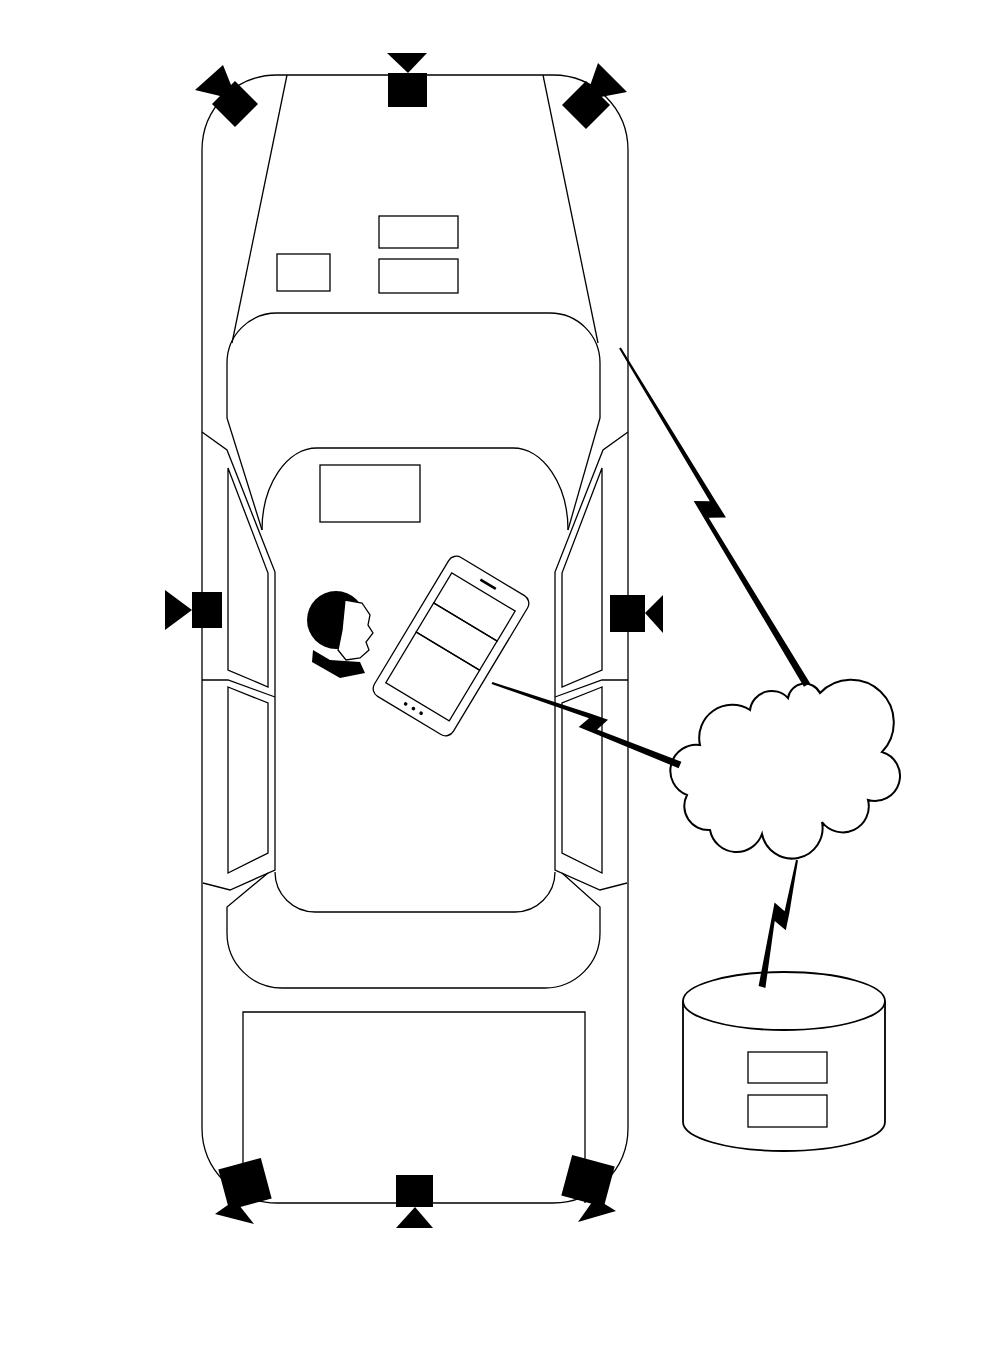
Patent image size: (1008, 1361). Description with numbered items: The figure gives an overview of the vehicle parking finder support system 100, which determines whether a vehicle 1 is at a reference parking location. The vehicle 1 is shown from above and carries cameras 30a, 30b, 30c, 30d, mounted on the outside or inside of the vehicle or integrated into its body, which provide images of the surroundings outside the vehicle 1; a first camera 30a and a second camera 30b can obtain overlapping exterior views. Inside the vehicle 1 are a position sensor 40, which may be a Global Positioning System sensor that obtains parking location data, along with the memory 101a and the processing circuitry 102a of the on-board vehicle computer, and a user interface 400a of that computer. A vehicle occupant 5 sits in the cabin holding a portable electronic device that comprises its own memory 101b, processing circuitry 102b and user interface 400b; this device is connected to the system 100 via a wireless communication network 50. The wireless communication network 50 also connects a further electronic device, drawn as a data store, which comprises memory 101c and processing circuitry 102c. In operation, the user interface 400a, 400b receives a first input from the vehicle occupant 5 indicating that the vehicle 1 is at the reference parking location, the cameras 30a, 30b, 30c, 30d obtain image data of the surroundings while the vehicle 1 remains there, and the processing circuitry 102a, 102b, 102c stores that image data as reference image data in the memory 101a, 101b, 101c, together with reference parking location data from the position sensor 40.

The vehicle parking finder support system 100 is at (84, 43).
The vehicle 1 is at (652, 320).
The first camera 30a is at (233, 88).
The second camera 30b is at (405, 67).
The camera 30c is at (662, 614).
The camera 30d is at (603, 1205).
The position sensor 40 is at (303, 272).
The memory 101a is at (418, 232).
The processing circuitry 102a is at (418, 276).
The user interface 400a is at (370, 493).
The vehicle occupant 5 is at (340, 649).
The memory 101b is at (474, 607).
The processing circuitry 102b is at (456, 636).
The user interface 400b is at (433, 676).
The wireless communication network 50 is at (785, 769).
The memory 101c is at (787, 1067).
The processing circuitry 102c is at (436, 795).